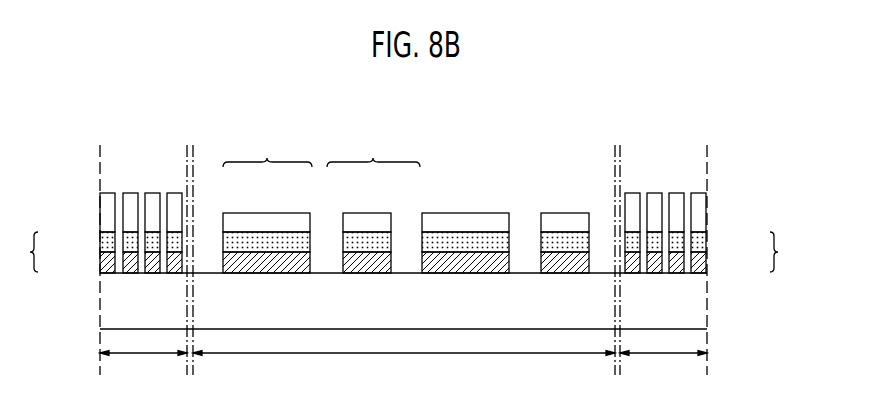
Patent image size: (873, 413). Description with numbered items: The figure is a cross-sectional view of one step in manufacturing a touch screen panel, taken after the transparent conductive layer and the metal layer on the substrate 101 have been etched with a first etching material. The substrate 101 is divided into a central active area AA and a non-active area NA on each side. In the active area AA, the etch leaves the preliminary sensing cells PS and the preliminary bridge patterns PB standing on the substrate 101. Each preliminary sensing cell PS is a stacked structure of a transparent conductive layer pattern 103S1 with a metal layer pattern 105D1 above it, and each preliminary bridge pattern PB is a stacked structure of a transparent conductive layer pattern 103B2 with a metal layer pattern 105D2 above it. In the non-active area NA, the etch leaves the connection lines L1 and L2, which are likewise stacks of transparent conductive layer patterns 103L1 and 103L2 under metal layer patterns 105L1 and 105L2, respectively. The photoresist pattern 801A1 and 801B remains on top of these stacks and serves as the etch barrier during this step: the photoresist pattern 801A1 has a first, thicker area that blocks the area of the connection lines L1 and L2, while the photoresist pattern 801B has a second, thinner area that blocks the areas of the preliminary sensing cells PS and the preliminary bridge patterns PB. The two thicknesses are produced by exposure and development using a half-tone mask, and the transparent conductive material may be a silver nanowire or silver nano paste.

The substrate 101 is at (707, 305).
The photoresist pattern 801A1 is at (152, 197).
The photoresist pattern 801B is at (487, 216).
The metal layer pattern 105L1 is at (101, 243).
The transparent conductive layer pattern 103L1 is at (101, 260).
The connection line L1 is at (26, 252).
The metal layer pattern 105L2 is at (706, 241).
The transparent conductive layer pattern 103L2 is at (706, 262).
The connection line L2 is at (784, 252).
The preliminary sensing cell PS is at (268, 205).
The preliminary bridge pattern PB is at (374, 205).
The metal layer pattern 105D1 is at (239, 243).
The transparent conductive layer pattern 103S1 is at (286, 258).
The metal layer pattern 105D2 is at (360, 243).
The transparent conductive layer pattern 103B2 is at (379, 258).
The non-active area NA is at (403, 365).
The active area AA is at (404, 365).